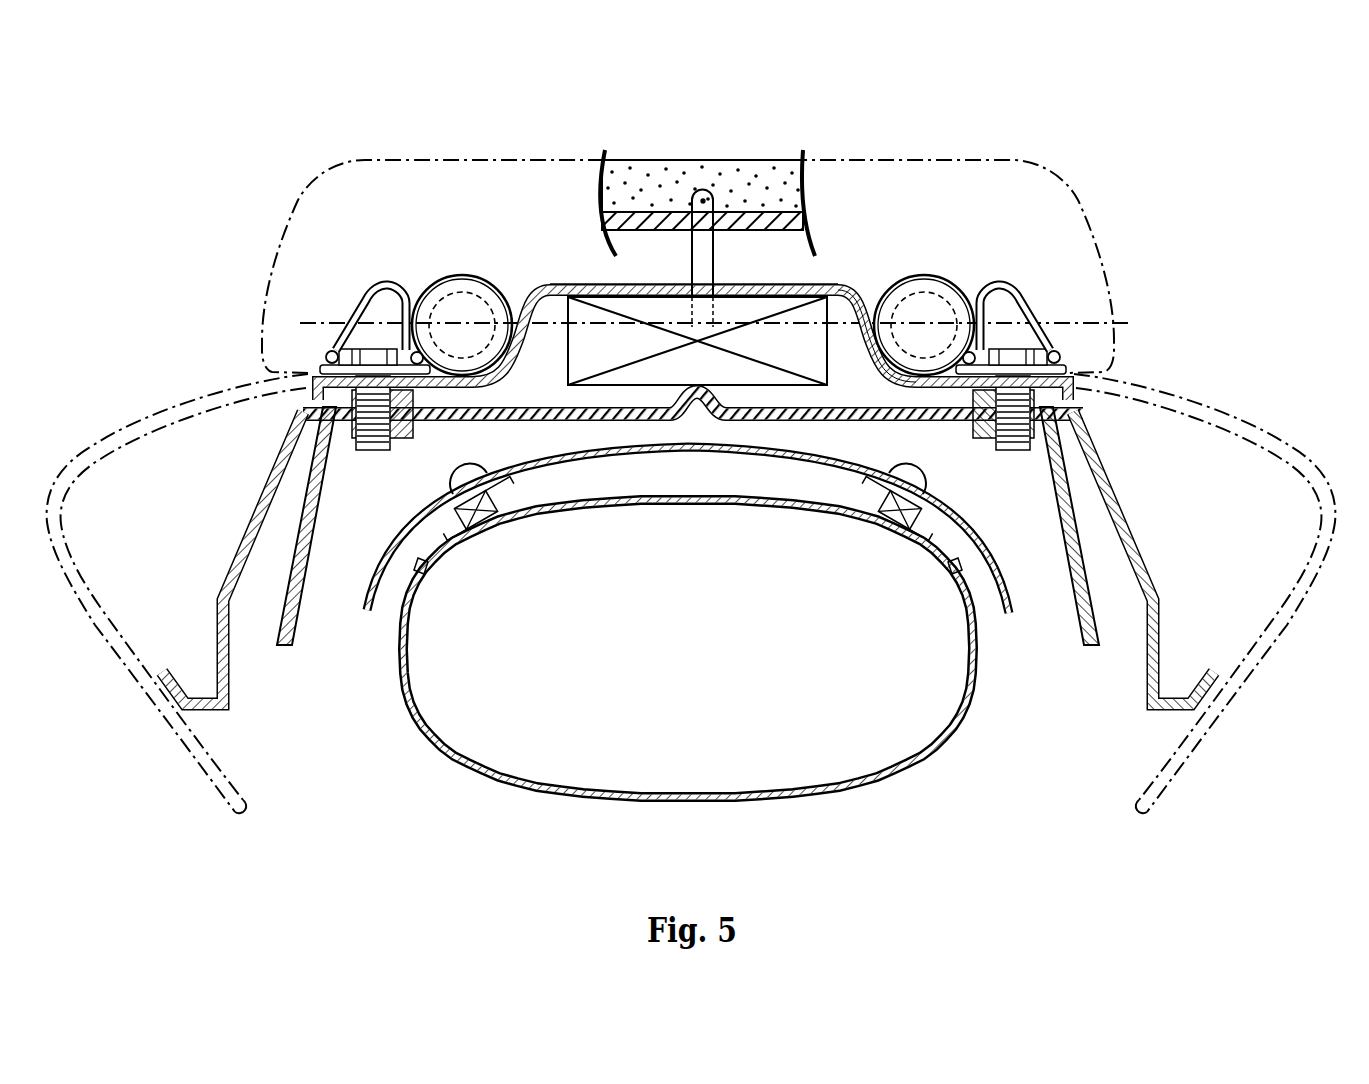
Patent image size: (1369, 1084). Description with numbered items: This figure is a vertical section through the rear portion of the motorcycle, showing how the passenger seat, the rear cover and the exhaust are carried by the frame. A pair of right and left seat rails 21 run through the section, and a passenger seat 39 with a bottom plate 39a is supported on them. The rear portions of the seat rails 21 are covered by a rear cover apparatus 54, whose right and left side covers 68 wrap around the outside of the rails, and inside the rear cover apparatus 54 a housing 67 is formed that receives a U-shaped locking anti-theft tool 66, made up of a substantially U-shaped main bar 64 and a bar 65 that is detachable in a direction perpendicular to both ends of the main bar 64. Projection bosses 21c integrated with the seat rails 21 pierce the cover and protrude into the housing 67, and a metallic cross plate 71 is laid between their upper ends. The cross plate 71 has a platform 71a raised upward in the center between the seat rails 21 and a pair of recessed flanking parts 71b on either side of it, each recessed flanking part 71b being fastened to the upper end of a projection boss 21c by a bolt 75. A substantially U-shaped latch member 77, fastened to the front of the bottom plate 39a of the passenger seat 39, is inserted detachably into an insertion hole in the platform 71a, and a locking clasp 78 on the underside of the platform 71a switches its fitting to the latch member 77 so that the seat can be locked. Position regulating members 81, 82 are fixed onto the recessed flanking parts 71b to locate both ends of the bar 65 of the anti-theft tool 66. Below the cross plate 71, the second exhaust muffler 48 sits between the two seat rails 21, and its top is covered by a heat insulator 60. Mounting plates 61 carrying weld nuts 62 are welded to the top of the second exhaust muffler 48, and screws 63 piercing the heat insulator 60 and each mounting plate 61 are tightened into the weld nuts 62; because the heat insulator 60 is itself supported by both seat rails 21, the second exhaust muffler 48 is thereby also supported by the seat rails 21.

The seat rail 21 is at (270, 600).
The projection boss 21c is at (307, 480).
The passenger seat 39 is at (666, 160).
The bottom plate 39a is at (797, 322).
The second exhaust muffler 48 is at (935, 740).
The rear cover apparatus 54 is at (1225, 388).
The heat insulator 60 is at (714, 422).
The mounting plate 61 is at (533, 520).
The weld nut 62 is at (473, 525).
The screw 63 is at (462, 474).
The main bar 64 is at (945, 265).
The bar 65 is at (803, 283).
The U-shaped locking anti-theft tool 66 is at (927, 268).
The housing 67 is at (741, 252).
The side cover 68 is at (112, 420).
The cross plate 71 is at (552, 280).
The platform 71a is at (643, 282).
The recessed flanking part 71b is at (447, 337).
The bolt 75 is at (390, 352).
The latch member 77 is at (697, 263).
The locking clasp 78 is at (763, 373).
The position regulating member 81 is at (1002, 295).
The position regulating member 82 is at (376, 283).